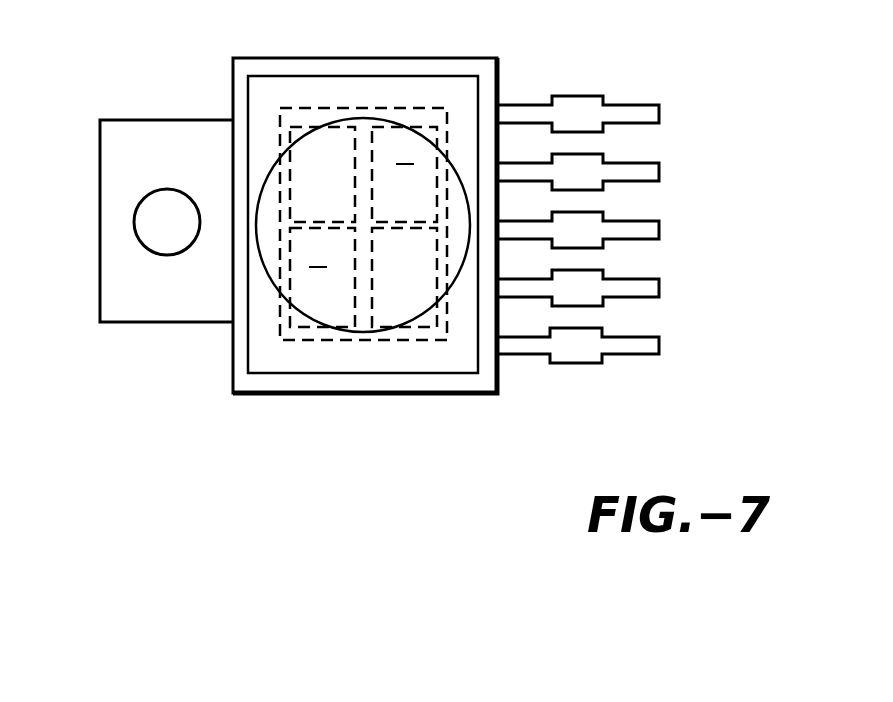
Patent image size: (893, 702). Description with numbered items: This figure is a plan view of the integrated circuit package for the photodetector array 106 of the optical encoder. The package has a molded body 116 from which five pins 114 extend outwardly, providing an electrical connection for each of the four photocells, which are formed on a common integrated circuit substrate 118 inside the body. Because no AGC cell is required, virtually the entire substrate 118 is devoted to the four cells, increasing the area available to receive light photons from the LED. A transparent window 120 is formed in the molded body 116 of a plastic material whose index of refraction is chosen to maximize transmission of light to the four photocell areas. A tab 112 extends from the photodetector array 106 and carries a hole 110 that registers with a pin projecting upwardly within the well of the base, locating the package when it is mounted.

The integrated circuit photodetector array 106 is at (397, 267).
The hole 110 is at (140, 226).
The tab 112 is at (160, 305).
The pins 114 is at (660, 228).
The molded body 116 is at (480, 396).
The integrated circuit substrate 118 is at (407, 342).
The transparent window 120 is at (453, 192).